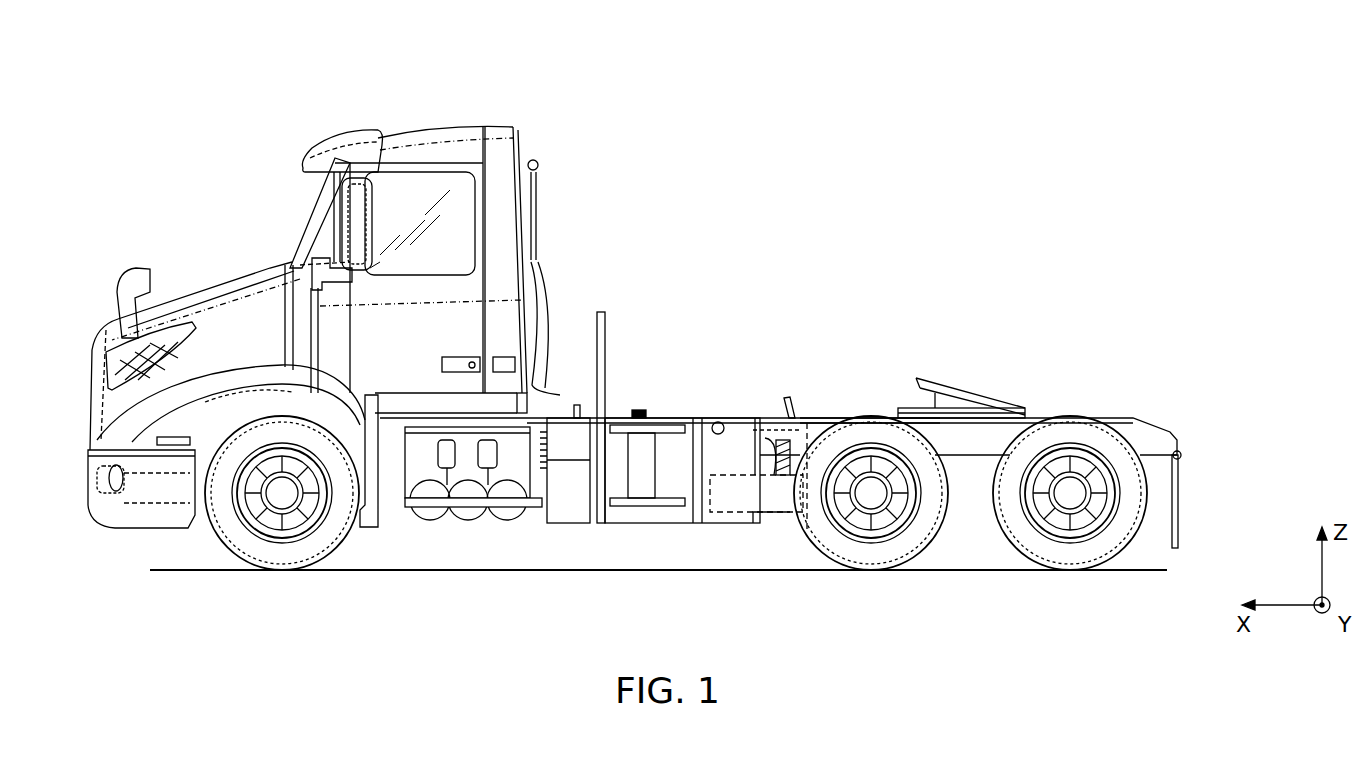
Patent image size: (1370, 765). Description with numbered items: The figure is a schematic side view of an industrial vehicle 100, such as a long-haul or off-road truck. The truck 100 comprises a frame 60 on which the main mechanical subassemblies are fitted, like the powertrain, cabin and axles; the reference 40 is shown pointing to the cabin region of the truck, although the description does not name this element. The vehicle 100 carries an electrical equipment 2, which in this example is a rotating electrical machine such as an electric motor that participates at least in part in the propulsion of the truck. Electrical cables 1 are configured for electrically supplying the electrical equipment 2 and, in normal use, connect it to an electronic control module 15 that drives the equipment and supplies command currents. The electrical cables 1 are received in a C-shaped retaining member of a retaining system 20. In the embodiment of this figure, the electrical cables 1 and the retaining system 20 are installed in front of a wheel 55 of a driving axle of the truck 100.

The industrial vehicle 100 is at (620, 122).
The cab 40 is at (507, 322).
The wheel 55 is at (873, 500).
The frame 60 is at (975, 437).
The electronic control module 15 is at (780, 432).
The retaining system 20 is at (838, 425).
The electrical equipment 2 is at (748, 500).
The electrical cables 1 is at (809, 530).